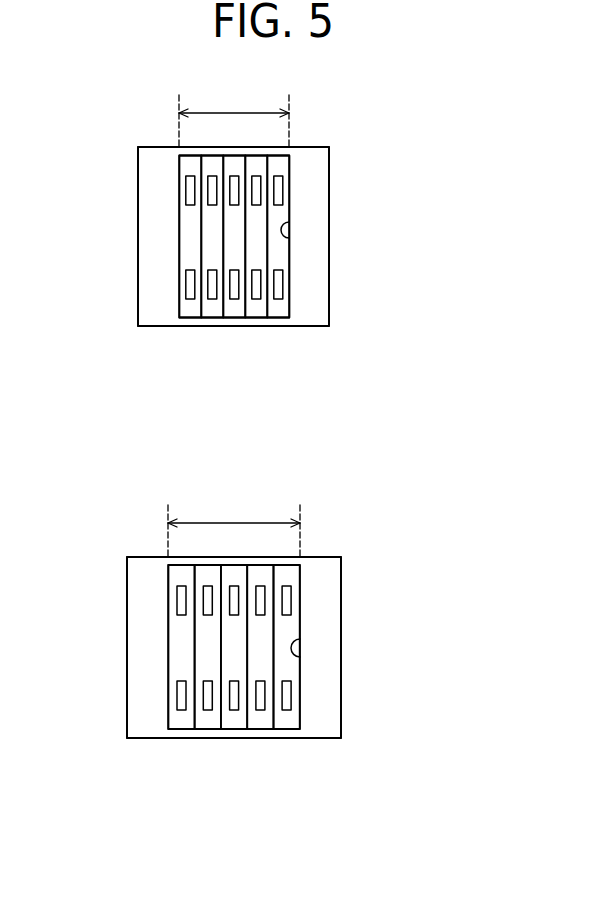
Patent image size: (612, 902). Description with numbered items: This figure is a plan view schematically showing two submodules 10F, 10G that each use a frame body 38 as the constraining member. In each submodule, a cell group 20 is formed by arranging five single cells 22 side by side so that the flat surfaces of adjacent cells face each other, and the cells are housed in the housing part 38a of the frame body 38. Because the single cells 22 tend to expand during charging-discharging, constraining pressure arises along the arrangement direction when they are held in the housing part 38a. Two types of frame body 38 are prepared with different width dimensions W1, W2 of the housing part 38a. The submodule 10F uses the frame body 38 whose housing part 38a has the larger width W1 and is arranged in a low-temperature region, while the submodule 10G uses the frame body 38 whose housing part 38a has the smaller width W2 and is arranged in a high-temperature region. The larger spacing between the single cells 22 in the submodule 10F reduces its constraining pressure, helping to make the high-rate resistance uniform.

The submodule 10F is at (150, 142).
The submodule 10G is at (141, 553).
The cell group 20 is at (322, 398).
The single cell 22 is at (193, 312).
The frame body 38 is at (317, 187).
The housing part 38a is at (289, 238).
The width dimension W1 is at (234, 116).
The width dimension W2 is at (234, 526).